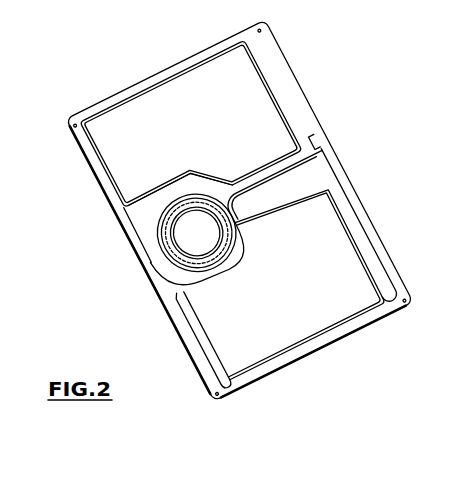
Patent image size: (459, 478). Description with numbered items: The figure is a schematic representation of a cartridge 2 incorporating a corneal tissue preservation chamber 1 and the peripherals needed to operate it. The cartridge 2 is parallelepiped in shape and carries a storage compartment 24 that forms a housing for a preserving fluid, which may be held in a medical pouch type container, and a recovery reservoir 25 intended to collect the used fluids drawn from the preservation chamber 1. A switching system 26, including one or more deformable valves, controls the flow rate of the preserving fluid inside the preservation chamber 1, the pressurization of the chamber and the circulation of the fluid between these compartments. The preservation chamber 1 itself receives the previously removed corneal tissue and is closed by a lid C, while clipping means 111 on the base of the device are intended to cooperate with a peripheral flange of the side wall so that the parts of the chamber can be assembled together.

The cartridge 2 is at (131, 59).
The storage compartment 24 is at (185, 113).
The recovery reservoir 25 is at (228, 343).
The switching system 26 is at (314, 171).
The lid C is at (213, 207).
The clipping means 111 is at (165, 211).
The preservation chamber 1 is at (158, 271).